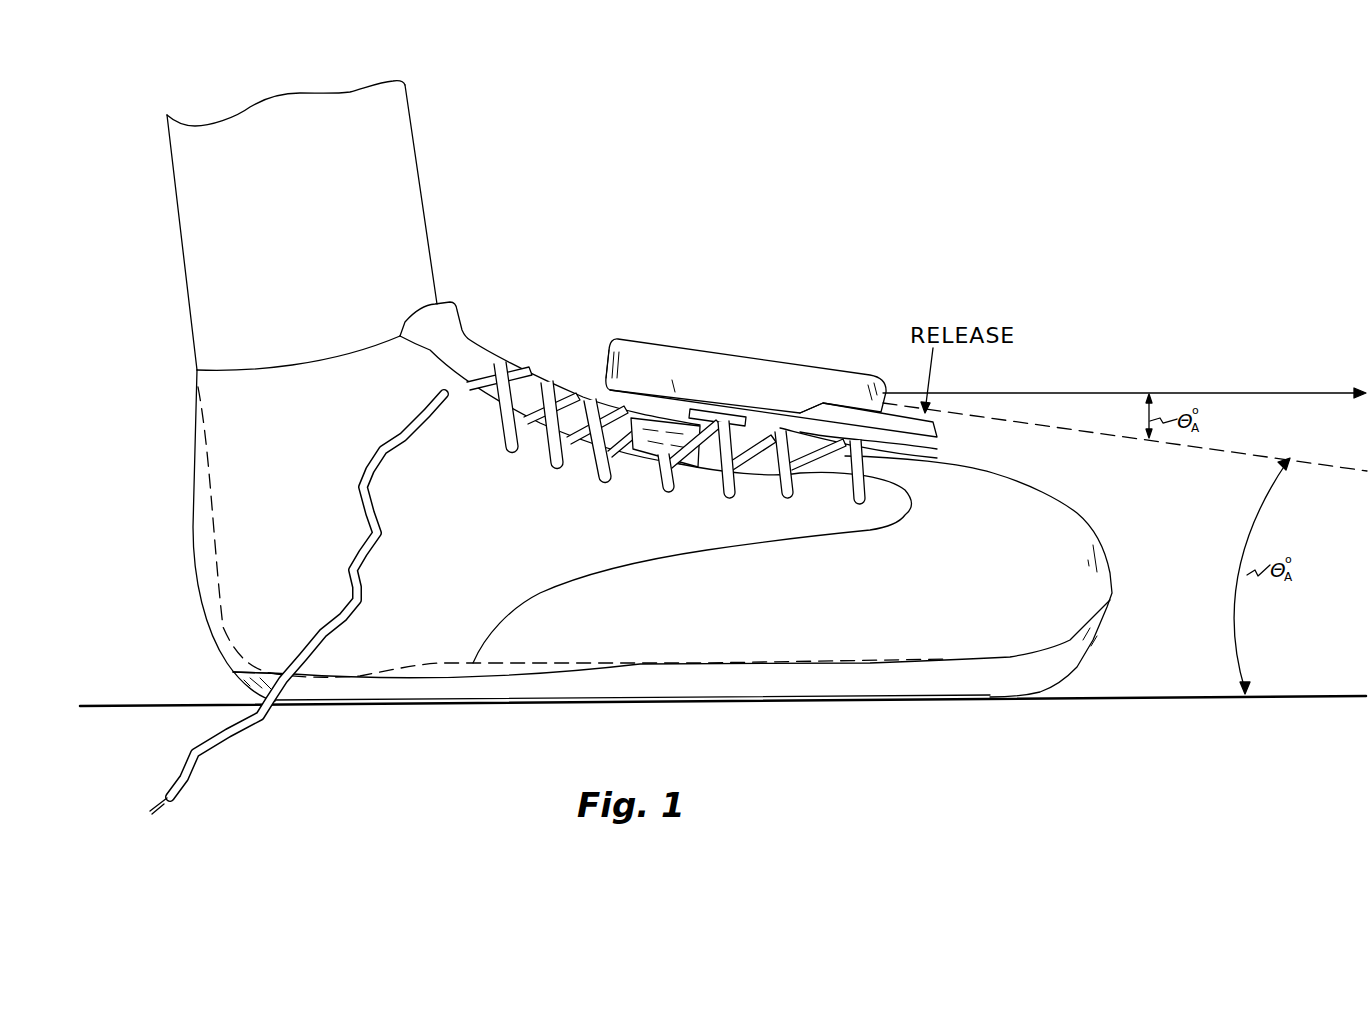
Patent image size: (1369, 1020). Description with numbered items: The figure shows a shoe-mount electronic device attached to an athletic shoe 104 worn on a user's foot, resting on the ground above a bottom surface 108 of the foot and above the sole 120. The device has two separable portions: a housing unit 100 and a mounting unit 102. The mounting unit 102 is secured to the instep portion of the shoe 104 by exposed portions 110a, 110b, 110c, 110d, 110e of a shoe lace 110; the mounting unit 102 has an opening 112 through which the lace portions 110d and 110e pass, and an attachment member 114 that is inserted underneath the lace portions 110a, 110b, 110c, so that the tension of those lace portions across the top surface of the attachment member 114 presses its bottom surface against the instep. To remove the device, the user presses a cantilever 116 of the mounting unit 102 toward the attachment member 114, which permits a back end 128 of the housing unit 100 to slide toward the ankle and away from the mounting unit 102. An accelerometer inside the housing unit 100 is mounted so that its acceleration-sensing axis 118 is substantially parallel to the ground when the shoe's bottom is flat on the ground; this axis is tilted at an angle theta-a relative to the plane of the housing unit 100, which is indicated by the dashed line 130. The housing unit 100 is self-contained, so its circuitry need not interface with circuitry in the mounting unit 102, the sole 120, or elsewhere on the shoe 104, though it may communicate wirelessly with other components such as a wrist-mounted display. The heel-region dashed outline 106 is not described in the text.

The housing unit 100 is at (801, 352).
The mounting unit 102 is at (645, 448).
The athletic shoe 104 is at (230, 477).
The heel counter 106 is at (213, 580).
The bottom surface of the user's foot 108 is at (517, 672).
The shoe lace 110 is at (381, 451).
The exposed shoelace portion 110a is at (866, 477).
The exposed shoelace portion 110b is at (787, 473).
The exposed shoelace portion 110c is at (748, 475).
The exposed shoelace portion 110d is at (723, 477).
The exposed shoelace portion 110e is at (692, 467).
The opening 112 is at (697, 409).
The attachment member 114 is at (937, 448).
The cantilever 116 is at (940, 420).
The acceleration-sensing axis 118 is at (1247, 391).
The sole 120 is at (626, 688).
The back end of the housing unit 128 is at (604, 357).
The dashed line indicating plane of the housing unit 130 is at (1243, 453).